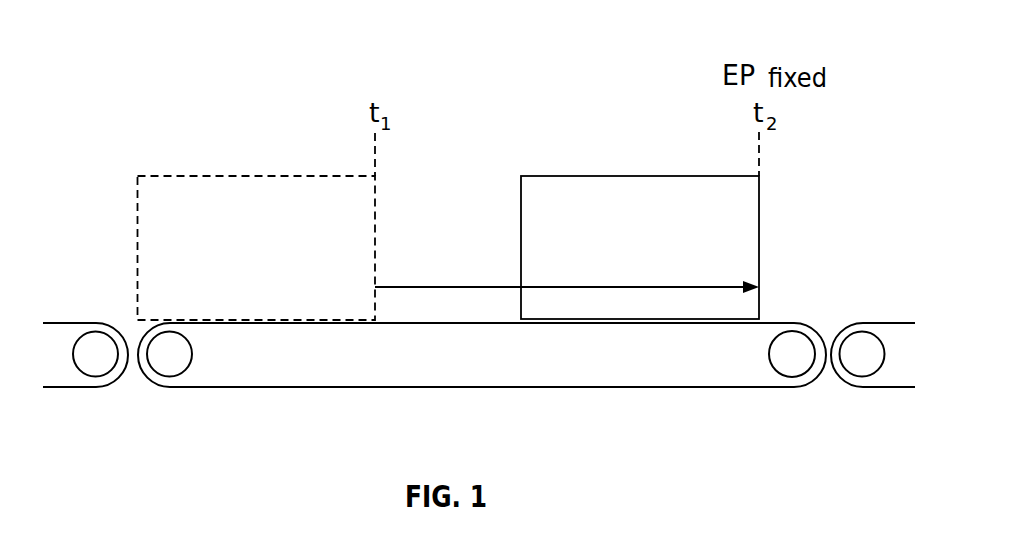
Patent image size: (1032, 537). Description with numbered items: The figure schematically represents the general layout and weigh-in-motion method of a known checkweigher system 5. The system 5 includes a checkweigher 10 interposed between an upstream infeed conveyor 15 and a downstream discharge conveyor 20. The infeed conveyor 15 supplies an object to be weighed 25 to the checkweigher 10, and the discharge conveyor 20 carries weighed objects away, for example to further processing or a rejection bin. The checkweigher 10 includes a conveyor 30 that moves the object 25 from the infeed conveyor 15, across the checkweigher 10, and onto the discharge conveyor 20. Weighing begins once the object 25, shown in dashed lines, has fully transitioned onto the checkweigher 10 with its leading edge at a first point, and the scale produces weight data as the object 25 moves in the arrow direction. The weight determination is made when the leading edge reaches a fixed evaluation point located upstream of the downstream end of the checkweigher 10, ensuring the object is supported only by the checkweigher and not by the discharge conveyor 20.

The checkweigher system 5 is at (214, 42).
The checkweigher 10 is at (276, 402).
The infeed conveyor 15 is at (81, 384).
The discharge conveyor 20 is at (877, 384).
The object to be weighed 25 is at (167, 217).
The conveyor 30 is at (735, 384).